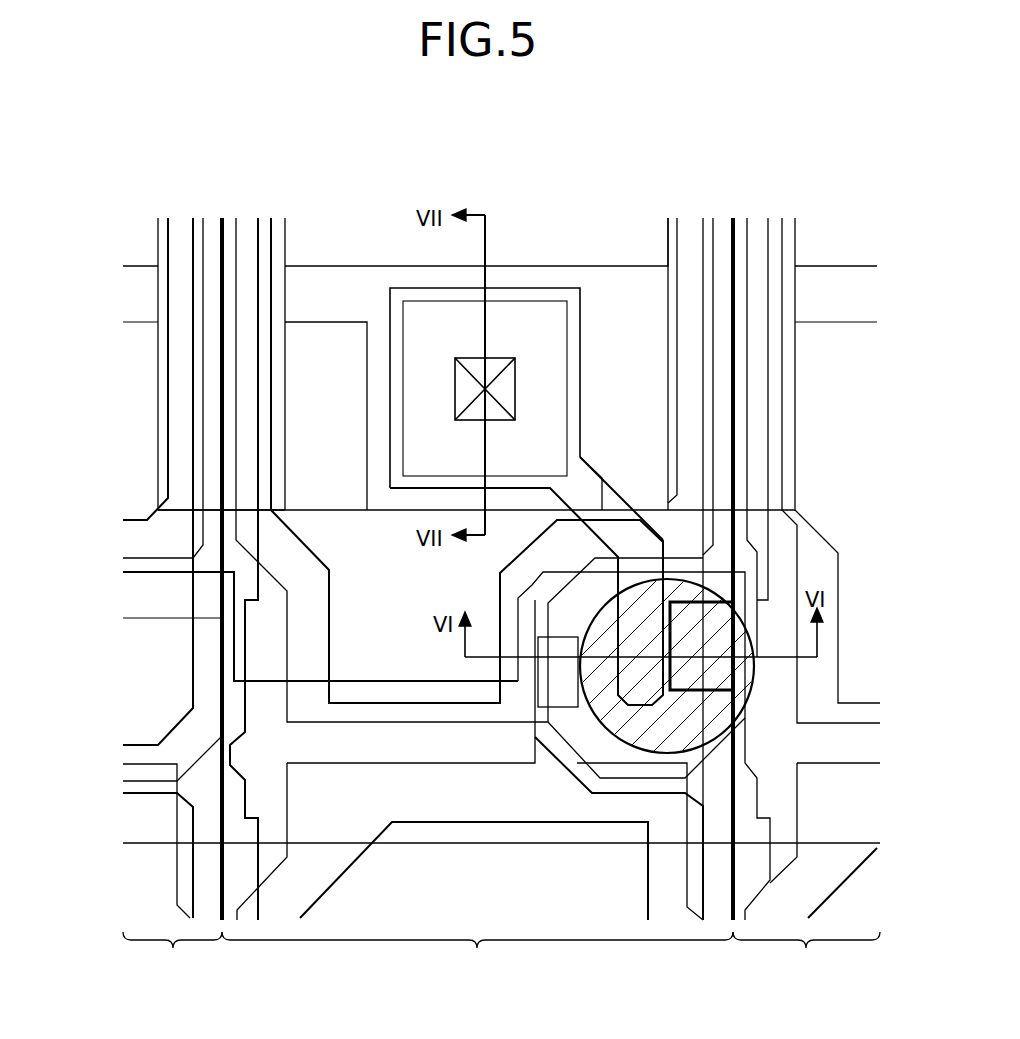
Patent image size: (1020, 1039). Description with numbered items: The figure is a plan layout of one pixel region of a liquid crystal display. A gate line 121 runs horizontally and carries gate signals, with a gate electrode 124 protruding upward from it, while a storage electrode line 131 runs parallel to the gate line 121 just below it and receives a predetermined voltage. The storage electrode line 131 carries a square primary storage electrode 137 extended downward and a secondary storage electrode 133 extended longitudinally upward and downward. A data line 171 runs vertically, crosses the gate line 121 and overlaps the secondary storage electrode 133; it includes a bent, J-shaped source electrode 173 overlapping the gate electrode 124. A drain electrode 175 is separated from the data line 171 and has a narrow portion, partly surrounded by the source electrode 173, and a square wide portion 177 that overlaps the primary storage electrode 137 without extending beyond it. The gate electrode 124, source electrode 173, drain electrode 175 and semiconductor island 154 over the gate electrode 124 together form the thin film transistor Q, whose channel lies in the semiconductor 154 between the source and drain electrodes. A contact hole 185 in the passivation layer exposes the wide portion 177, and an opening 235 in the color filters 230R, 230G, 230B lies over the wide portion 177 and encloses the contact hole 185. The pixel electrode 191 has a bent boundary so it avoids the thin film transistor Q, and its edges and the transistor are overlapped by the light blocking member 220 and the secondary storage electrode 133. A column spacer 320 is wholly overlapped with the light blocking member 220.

The gate line 121 is at (405, 683).
The gate electrode 124 is at (532, 583).
The storage electrode line 131 is at (330, 264).
The secondary storage electrode 133 is at (158, 405).
The primary storage electrode 137 is at (407, 512).
The semiconductor island 154 is at (733, 763).
The data line 171 is at (703, 310).
The source electrode 173 is at (560, 762).
The drain electrode 175 is at (623, 498).
The wide portion 177 is at (551, 288).
The contact hole 185 is at (455, 385).
The pixel electrode 191 is at (285, 649).
The light blocking member 220 is at (680, 407).
The green color filter 230G is at (172, 957).
The blue color filter 230B is at (477, 957).
The red color filter 230R is at (806, 957).
The opening 235 is at (514, 300).
The column spacer 320 is at (730, 567).
The thin film transistor Q is at (579, 722).